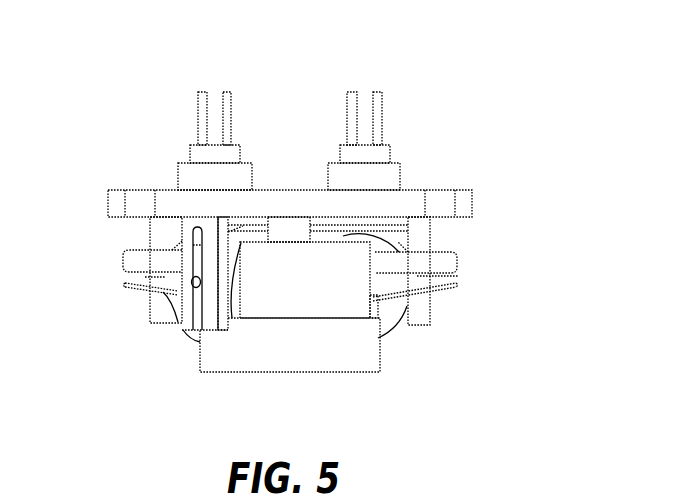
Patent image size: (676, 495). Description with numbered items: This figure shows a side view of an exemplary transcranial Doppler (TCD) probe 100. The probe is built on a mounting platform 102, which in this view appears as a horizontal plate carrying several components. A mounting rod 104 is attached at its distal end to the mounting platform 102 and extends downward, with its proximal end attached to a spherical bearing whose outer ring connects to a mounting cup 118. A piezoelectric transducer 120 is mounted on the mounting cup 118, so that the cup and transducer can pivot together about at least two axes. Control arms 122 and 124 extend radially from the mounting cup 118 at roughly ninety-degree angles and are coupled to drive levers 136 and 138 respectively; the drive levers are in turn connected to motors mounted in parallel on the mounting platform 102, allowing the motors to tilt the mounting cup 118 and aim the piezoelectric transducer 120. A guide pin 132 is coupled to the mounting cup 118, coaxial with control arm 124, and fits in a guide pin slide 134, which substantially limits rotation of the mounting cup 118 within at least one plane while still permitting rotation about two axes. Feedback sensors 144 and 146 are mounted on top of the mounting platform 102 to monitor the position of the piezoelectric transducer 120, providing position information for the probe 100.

The transcranial Doppler probe 100 is at (447, 86).
The mounting platform 102 is at (435, 202).
The mounting rod 104 is at (288, 223).
The mounting cup 118 is at (290, 298).
The piezoelectric transducer 120 is at (323, 347).
The control arm 122 is at (162, 278).
The control arm 124 is at (400, 280).
The guide pin 132 is at (192, 287).
The guide pin slide 134 is at (186, 265).
The drive lever 136 is at (145, 260).
The drive lever 138 is at (405, 257).
The feedback sensor 144 is at (210, 170).
The feedback sensor 146 is at (355, 172).